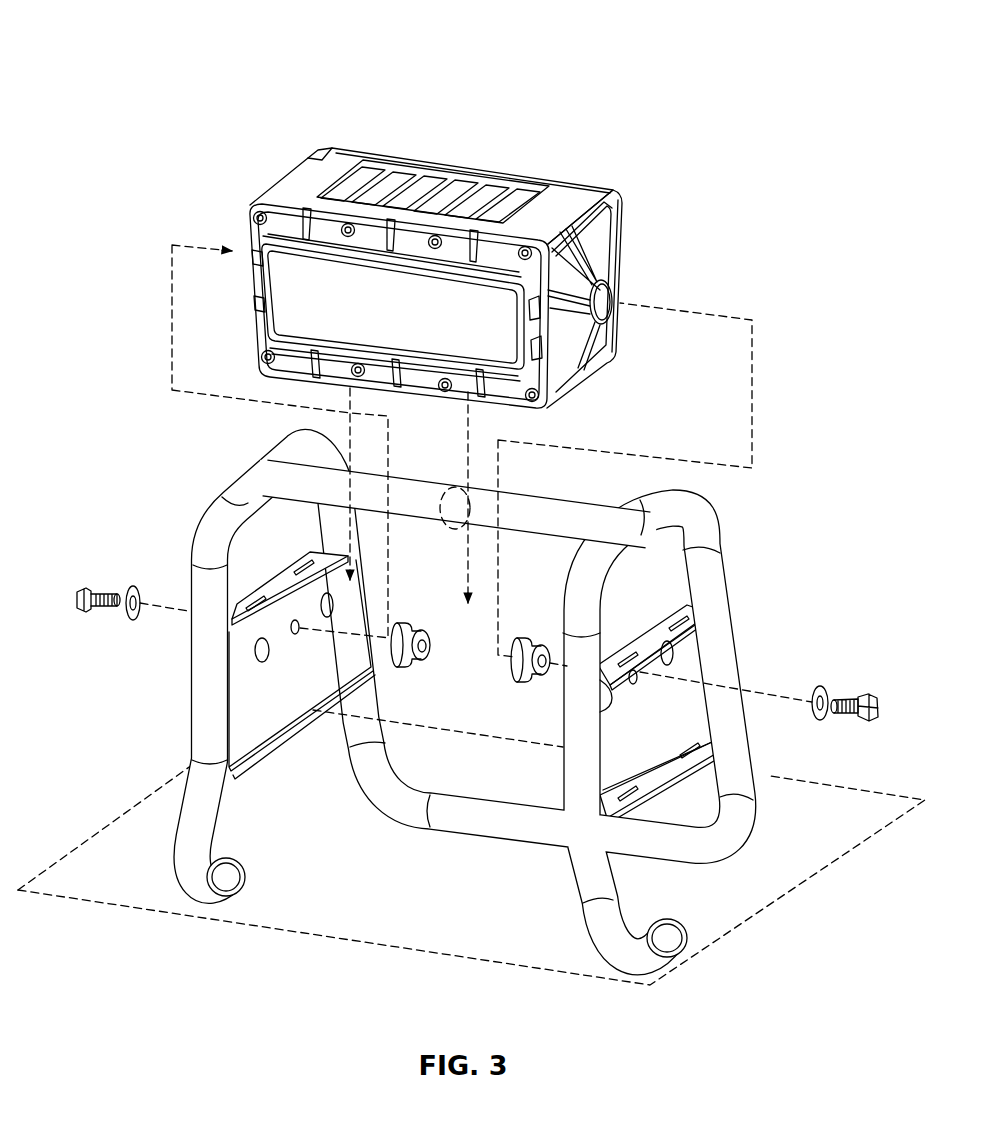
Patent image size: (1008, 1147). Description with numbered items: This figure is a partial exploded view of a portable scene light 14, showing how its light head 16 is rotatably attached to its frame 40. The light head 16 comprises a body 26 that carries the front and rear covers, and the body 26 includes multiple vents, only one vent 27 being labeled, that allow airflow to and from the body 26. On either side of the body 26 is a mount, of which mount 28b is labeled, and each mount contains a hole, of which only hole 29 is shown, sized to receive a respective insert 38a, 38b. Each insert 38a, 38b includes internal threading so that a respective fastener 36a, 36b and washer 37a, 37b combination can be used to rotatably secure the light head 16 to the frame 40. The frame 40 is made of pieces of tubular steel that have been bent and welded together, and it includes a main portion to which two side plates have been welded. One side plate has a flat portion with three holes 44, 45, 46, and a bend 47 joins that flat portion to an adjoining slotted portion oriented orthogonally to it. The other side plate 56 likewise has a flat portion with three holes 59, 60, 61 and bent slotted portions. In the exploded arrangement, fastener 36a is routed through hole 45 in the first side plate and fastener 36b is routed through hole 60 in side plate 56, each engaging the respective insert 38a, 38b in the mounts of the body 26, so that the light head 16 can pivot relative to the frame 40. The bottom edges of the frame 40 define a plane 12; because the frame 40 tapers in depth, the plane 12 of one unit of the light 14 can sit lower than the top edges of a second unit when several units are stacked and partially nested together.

The plane 12 is at (370, 936).
The scene light 14 is at (150, 50).
The light head 16 is at (346, 163).
The body 26 is at (559, 194).
The vent 27 is at (431, 178).
The mount 28b is at (592, 252).
The hole 29 is at (606, 298).
The frame 40 is at (702, 520).
The hole 44 is at (272, 468).
The bend 47 is at (323, 600).
The side plate 56 is at (243, 738).
The hole 46 is at (255, 655).
The hole 45 is at (322, 706).
The hole 59 is at (673, 653).
The hole 60 is at (640, 677).
The hole 61 is at (611, 697).
The insert 38a is at (430, 642).
The insert 38b is at (512, 665).
The fastener 36a is at (104, 590).
The fastener 36b is at (851, 697).
The washer 37a is at (141, 592).
The washer 37b is at (824, 690).